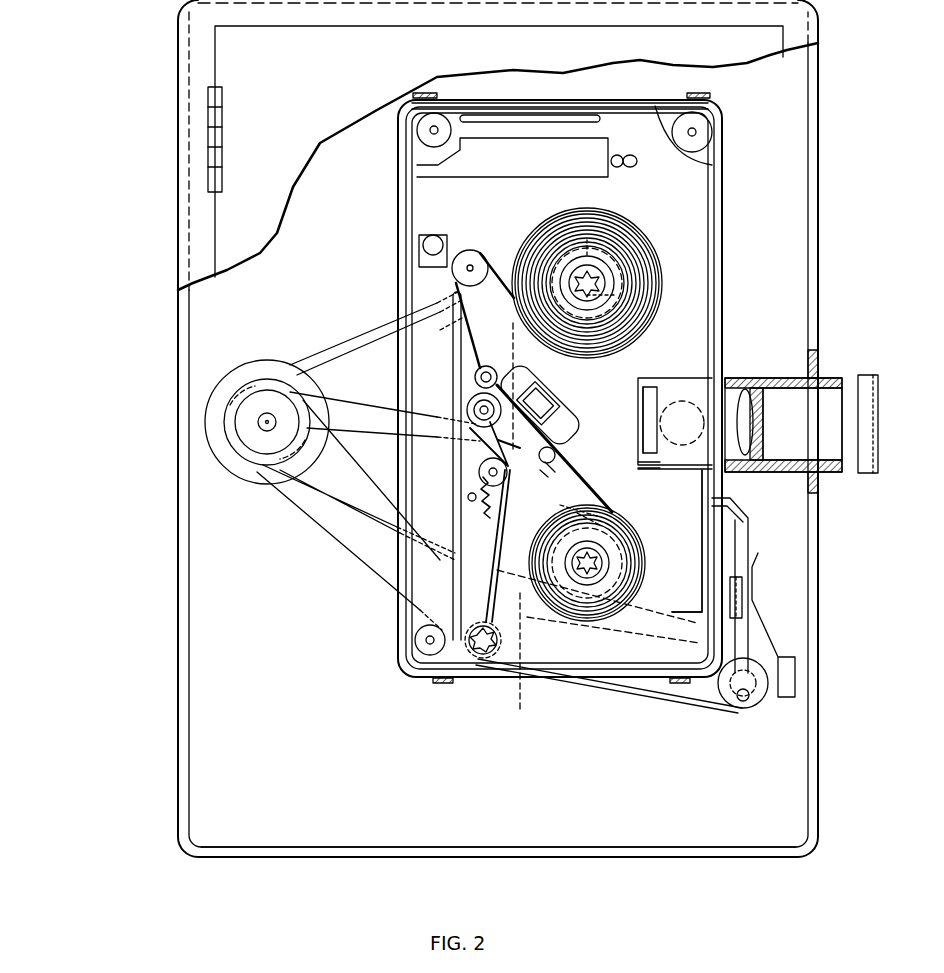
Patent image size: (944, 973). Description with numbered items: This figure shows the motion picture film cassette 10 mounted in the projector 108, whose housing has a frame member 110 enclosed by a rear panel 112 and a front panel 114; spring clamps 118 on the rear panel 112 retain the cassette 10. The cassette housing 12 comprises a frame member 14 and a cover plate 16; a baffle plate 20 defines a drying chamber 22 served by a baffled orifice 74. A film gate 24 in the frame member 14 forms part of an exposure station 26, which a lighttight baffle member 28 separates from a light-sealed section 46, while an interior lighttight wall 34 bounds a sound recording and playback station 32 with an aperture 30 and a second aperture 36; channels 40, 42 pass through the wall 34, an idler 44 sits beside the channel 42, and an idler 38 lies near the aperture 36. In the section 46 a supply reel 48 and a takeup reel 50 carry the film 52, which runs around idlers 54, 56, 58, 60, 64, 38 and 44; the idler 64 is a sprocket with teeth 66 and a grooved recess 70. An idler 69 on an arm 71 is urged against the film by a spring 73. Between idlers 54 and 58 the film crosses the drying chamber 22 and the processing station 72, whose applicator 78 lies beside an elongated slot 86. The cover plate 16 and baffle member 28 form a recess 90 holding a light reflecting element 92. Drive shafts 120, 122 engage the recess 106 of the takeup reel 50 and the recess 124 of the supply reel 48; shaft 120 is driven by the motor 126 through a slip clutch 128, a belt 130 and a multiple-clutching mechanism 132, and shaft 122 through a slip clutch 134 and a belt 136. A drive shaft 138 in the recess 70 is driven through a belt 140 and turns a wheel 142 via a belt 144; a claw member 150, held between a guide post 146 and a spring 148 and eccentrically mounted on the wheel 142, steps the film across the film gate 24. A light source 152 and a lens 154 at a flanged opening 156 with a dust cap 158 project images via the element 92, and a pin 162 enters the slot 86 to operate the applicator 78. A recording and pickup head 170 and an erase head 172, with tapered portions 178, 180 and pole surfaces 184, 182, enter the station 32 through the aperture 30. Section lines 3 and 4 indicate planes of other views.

The section line 3- 3 is at (479, 598).
The section line 4- 4 is at (498, 327).
The motion picture film cassette 10 is at (568, 680).
The housing 12 is at (400, 635).
The frame member 14 is at (400, 613).
The cover plate 16 is at (698, 183).
The baffle plate 20 is at (441, 330).
The drying chamber 22 is at (441, 581).
The film gate 24 is at (715, 350).
The exposure station 26 is at (722, 370).
The lighttight baffle member 28 is at (662, 401).
The aperture 30 is at (530, 365).
The sound recording and playback station 32 is at (505, 358).
The interior lighttight wall 34 is at (519, 478).
The second aperture 36 is at (472, 366).
The idler 38 is at (466, 415).
The channel 40 is at (526, 455).
The channel 42 is at (570, 433).
The idler 44 is at (545, 477).
The light-sealed section 46 is at (680, 216).
The supply reel 48 is at (610, 283).
The takeup reel 50 is at (623, 557).
The strip of motion picture film 52 is at (413, 212).
The idler 54 is at (480, 257).
The idler 56 is at (420, 652).
The idler 58 is at (420, 125).
The idler 60 is at (702, 125).
The idler 64 is at (480, 663).
The teeth 66 is at (506, 640).
The idler 69 is at (470, 470).
The grooved recess 70 is at (511, 598).
The arm 71 is at (468, 494).
The processing station 72 is at (396, 164).
The spring 73 is at (488, 510).
The baffled orifice 74 is at (443, 227).
The applicator 78 is at (543, 166).
The elongated slot 86 is at (624, 170).
The recess 90 is at (643, 463).
The light reflecting element 92 is at (647, 467).
The recess 106 is at (607, 590).
The projector 108 is at (175, 718).
The frame member 110 is at (820, 90).
The rear panel 112 is at (283, 830).
The front panel 114 is at (200, 63).
The spring clamps 118 is at (427, 91).
The drive shaft 120 is at (600, 517).
The drive shaft 122 is at (595, 235).
The recess 124 is at (617, 295).
The motor 126 is at (273, 358).
The slip clutch 128 is at (623, 533).
The belt 130 is at (577, 513).
The multiple-clutching mechanism 132 is at (252, 398).
The slip clutch 134 is at (610, 267).
The belt 136 is at (362, 333).
The drive shaft 138 is at (400, 623).
The belt 140 is at (343, 553).
The wheel 142 is at (750, 703).
The belt 144 is at (680, 713).
The guide post 146 is at (742, 590).
The spring 148 is at (763, 628).
The claw member 150 is at (747, 530).
The light source 152 is at (683, 400).
The lens 154 is at (763, 418).
The flanged opening 156 is at (825, 378).
The dust cap 158 is at (868, 375).
The pin 162 is at (652, 125).
The magnetic sound recording and pickup head 170 is at (590, 427).
The magnetic erase head 172 is at (587, 360).
The tapered portion 178 is at (577, 403).
The tapered portion 180 is at (530, 360).
The transducer pole surface 182 is at (537, 380).
The transducer pole surface 184 is at (570, 390).